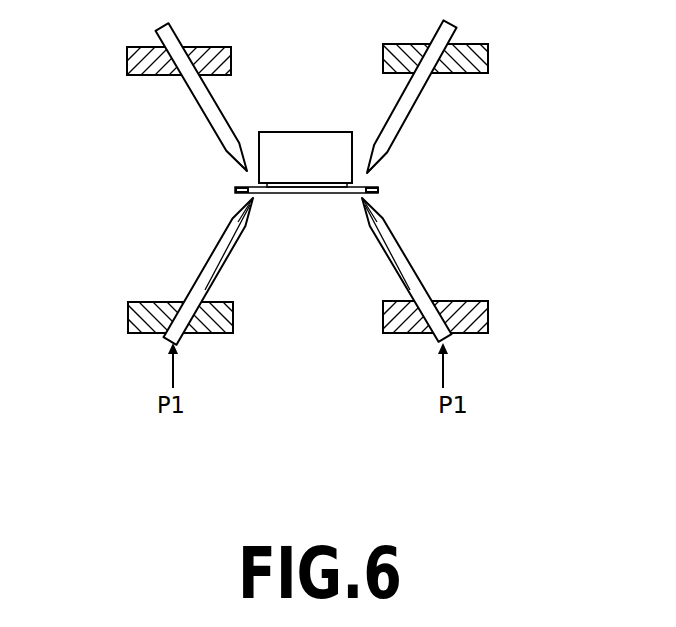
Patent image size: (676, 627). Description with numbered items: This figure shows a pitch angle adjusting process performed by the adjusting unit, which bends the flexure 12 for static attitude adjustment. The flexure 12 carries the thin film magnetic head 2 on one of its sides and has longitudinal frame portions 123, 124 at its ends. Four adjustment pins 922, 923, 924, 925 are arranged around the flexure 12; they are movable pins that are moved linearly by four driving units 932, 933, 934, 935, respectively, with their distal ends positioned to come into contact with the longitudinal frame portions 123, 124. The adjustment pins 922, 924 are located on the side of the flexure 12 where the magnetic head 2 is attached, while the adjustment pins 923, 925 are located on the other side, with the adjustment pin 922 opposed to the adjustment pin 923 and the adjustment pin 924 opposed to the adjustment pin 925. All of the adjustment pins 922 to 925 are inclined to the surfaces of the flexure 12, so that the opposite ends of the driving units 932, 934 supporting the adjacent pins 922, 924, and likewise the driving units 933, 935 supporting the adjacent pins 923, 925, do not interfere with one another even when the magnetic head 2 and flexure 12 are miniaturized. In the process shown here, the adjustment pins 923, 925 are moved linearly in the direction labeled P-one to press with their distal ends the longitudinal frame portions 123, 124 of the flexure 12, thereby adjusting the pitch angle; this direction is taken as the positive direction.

The magnetic head 2 is at (304, 122).
The flexure 12 is at (386, 172).
The longitudinal frame portion 123 is at (380, 190).
The longitudinal frame portion 124 is at (236, 190).
The adjustment pin 922 is at (405, 110).
The adjustment pin 923 is at (403, 255).
The adjustment pin 924 is at (210, 118).
The adjustment pin 925 is at (208, 273).
The driving unit 932 is at (475, 51).
The driving unit 933 is at (478, 315).
The driving unit 934 is at (127, 63).
The driving unit 935 is at (135, 323).